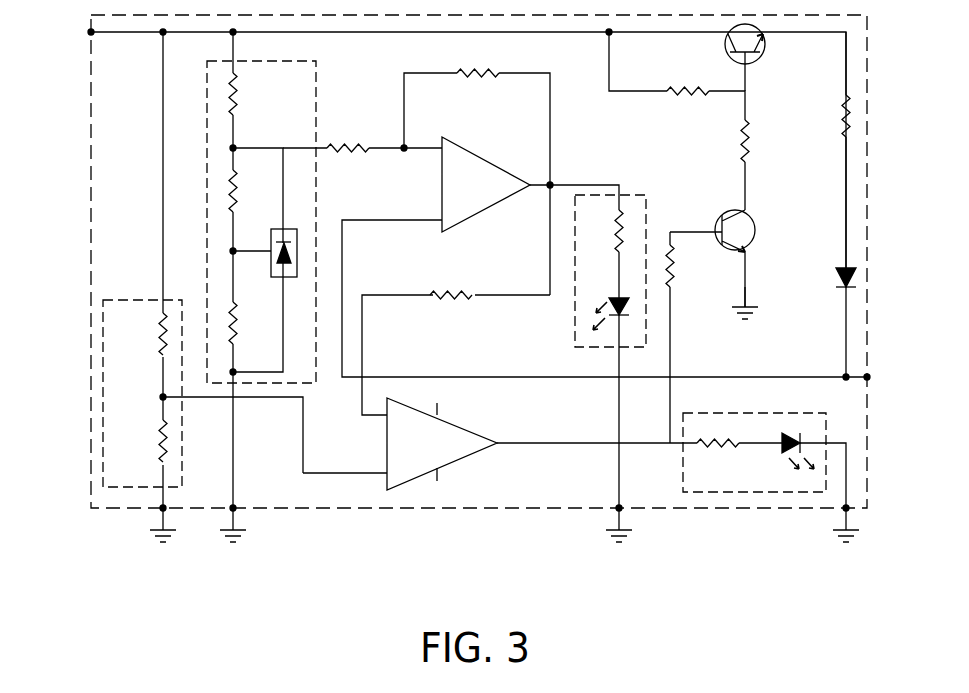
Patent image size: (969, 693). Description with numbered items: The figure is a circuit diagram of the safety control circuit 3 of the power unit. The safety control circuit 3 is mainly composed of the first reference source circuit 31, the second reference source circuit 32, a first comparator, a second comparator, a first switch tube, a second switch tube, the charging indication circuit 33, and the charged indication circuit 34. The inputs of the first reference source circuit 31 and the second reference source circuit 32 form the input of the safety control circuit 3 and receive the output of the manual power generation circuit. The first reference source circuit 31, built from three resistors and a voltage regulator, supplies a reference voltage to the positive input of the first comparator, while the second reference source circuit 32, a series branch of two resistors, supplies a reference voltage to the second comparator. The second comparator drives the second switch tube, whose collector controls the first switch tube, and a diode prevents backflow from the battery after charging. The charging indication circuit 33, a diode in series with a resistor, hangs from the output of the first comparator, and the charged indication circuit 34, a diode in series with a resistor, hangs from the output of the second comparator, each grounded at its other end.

The safety control circuit 3 is at (497, 483).
The first reference source circuit 31 is at (298, 363).
The second reference source circuit 32 is at (130, 470).
The "charging" indication circuit 33 is at (587, 333).
The "charged" indication circuit 34 is at (747, 475).